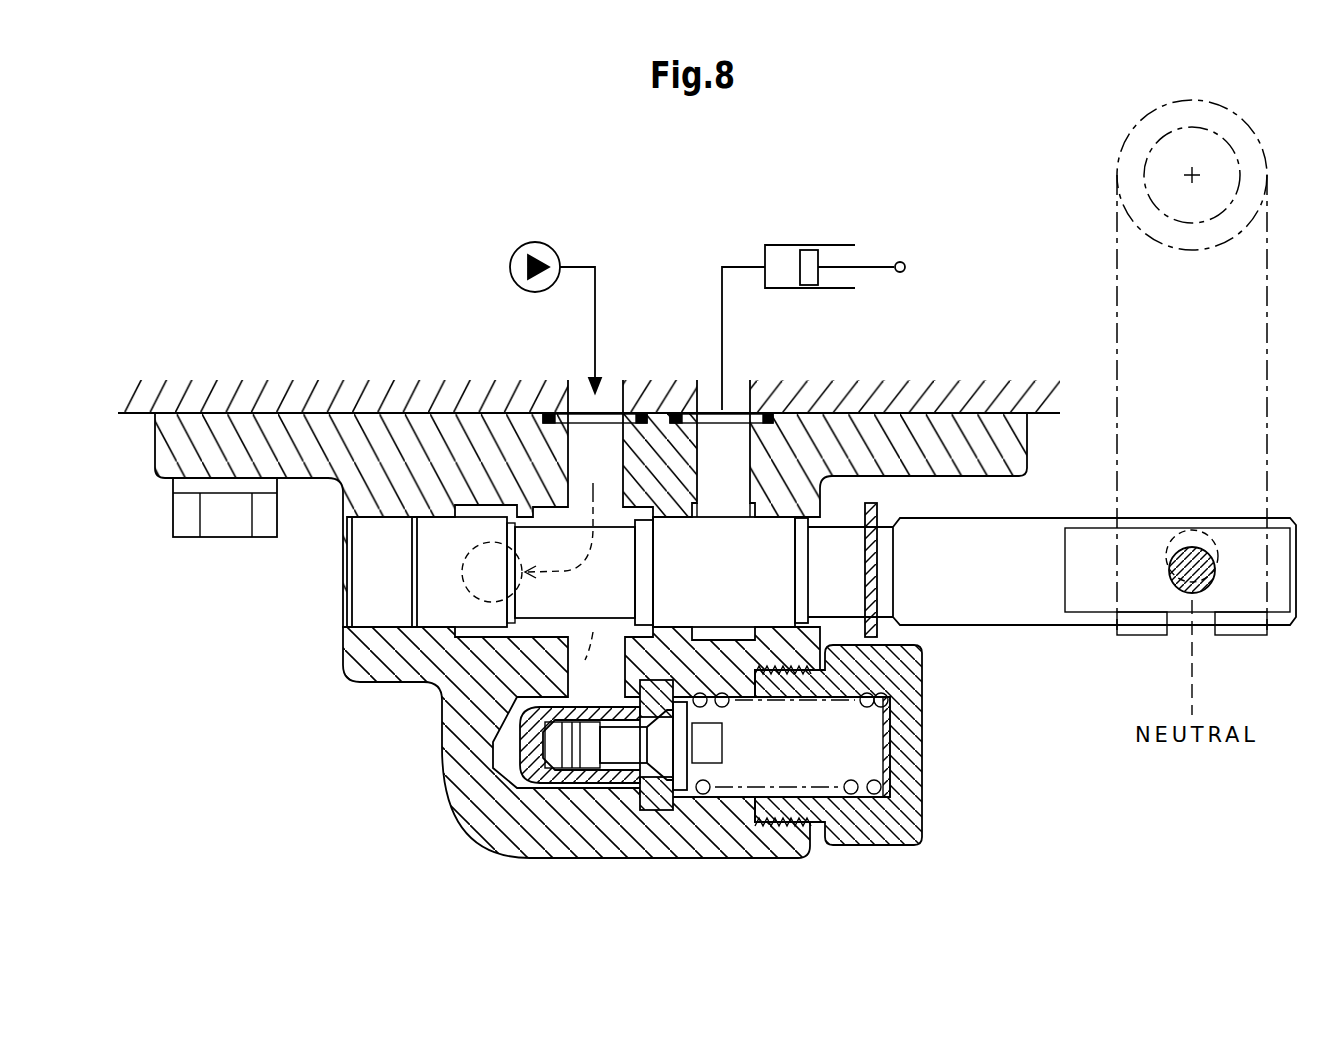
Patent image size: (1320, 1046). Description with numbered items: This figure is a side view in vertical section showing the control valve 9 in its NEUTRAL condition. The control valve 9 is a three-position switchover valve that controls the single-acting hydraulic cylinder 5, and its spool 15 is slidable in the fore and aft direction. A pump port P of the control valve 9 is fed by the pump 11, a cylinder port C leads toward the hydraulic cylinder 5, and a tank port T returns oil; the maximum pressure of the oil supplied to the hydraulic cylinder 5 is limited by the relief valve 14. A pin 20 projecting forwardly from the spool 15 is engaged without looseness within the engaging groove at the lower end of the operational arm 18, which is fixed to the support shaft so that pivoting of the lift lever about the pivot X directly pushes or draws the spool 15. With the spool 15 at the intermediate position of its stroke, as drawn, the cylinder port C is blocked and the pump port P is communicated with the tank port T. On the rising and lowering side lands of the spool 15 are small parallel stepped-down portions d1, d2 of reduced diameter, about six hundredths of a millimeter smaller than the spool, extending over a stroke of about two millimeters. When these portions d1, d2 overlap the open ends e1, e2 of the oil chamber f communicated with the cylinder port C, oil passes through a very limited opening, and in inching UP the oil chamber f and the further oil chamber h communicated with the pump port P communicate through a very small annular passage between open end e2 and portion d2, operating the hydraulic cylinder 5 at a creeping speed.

The single-acting hydraulic cylinder 5 is at (822, 245).
The control valve 9 is at (355, 709).
The pump 11 is at (531, 243).
The relief valve 14 is at (618, 785).
The spool 15 is at (1012, 626).
The operational arm 18 is at (1117, 325).
The pin 20 is at (1200, 548).
The pump port P is at (590, 430).
The cylinder port C is at (730, 430).
The tank port T is at (455, 577).
The oil chamber f is at (719, 508).
The oil chamber h is at (593, 632).
The parallel stepped-down portion d1 is at (805, 552).
The parallel stepped-down portion d2 is at (645, 573).
The open end e1 is at (750, 520).
The open end e2 is at (697, 520).
The pivot X is at (1192, 175).